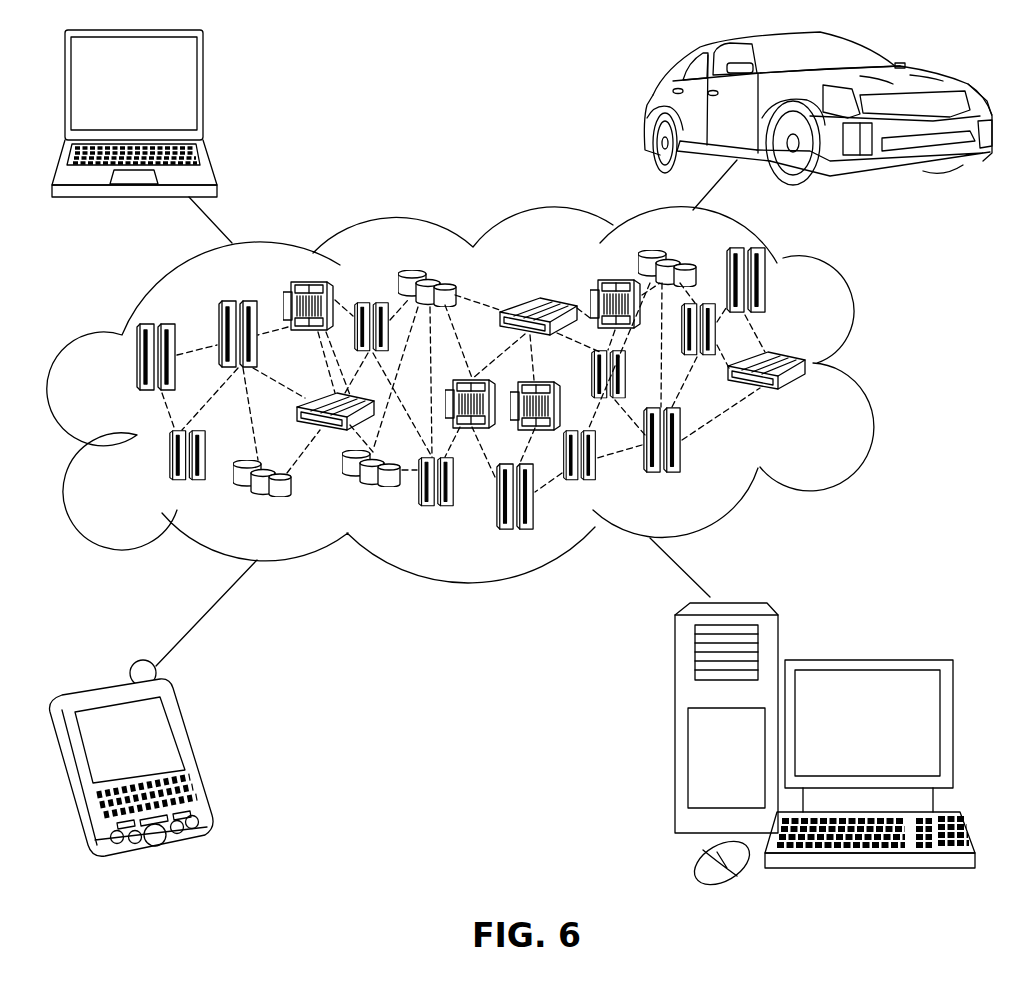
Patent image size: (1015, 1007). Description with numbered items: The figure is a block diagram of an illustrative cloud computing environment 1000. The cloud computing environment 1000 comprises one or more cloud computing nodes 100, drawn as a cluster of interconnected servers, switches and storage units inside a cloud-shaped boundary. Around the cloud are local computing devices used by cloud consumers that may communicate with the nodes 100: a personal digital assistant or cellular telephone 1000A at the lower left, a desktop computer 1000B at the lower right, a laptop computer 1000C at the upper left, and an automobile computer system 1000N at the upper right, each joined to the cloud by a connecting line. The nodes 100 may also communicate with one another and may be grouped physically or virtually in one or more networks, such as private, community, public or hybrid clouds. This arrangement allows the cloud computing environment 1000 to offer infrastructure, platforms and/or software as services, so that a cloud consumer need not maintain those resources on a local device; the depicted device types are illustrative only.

The cloud computing nodes 100 is at (808, 399).
The cloud computing environment 1000 is at (867, 369).
The personal digital assistant (PDA) or cellular telephone 1000A is at (195, 756).
The desktop computer 1000B is at (865, 660).
The laptop computer 1000C is at (203, 92).
The automobile computer system 1000N is at (643, 108).